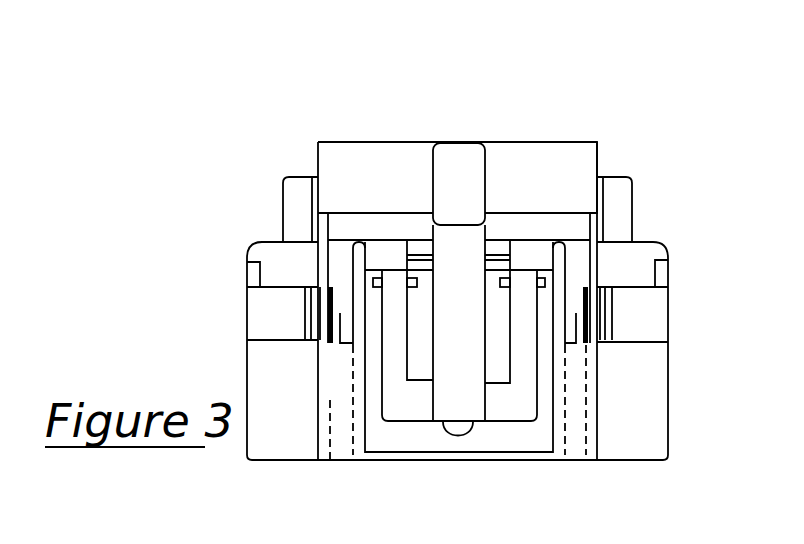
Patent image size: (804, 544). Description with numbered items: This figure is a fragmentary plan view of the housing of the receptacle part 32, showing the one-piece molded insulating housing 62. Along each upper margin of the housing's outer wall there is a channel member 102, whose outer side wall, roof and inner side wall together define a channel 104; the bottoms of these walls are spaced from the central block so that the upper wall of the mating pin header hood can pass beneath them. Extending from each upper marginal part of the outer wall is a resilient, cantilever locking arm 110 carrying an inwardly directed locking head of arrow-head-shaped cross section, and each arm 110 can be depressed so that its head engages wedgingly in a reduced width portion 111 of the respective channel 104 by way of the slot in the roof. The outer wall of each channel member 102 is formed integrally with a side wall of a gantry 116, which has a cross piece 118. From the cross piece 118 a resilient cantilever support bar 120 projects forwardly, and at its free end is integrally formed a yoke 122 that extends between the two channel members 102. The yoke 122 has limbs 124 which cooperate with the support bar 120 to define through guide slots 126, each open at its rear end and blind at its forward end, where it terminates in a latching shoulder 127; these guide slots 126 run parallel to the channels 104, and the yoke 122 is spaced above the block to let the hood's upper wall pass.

The receptacle part 32 is at (220, 158).
The insulating housing 62 is at (705, 284).
The channel member 102 is at (433, 333).
The channel 104 is at (359, 446).
The locking arm 110 is at (276, 311).
The reduced width portion 111 is at (344, 372).
The gantry 116 is at (369, 135).
The cross piece 118 is at (510, 164).
The support bar 120 is at (452, 255).
The yoke 122 is at (482, 410).
The limb 124 is at (384, 304).
The guide slot 126 is at (498, 312).
The latching shoulder 127 is at (418, 410).